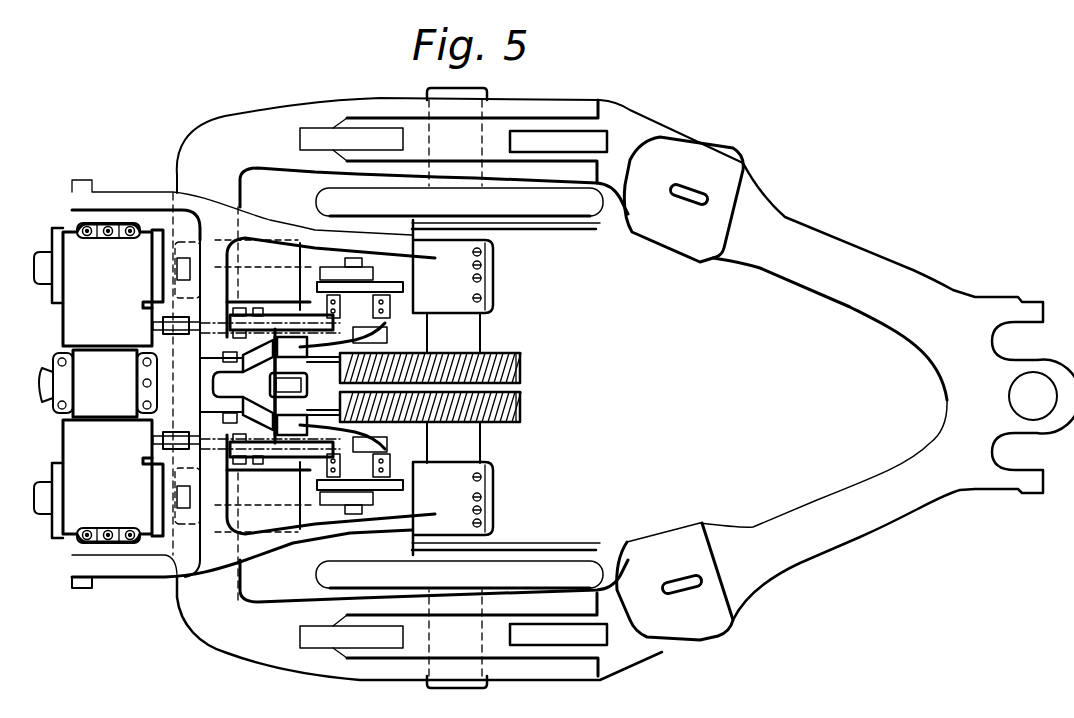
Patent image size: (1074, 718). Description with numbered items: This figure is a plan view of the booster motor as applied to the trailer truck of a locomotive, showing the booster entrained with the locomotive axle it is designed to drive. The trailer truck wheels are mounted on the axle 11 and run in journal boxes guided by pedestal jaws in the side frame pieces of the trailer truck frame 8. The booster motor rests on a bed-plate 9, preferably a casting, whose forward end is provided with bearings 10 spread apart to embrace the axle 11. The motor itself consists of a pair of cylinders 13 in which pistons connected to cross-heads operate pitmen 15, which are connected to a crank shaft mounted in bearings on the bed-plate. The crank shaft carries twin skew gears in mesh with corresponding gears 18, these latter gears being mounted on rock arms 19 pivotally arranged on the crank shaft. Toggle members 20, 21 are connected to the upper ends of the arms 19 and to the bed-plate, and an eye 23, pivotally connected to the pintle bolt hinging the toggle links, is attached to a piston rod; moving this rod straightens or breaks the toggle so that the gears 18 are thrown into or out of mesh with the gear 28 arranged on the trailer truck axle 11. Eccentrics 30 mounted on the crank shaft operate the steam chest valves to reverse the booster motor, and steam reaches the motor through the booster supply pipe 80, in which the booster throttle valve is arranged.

The trailer truck frame 8 is at (752, 537).
The bed-plate 9 is at (112, 200).
The bearings 10 is at (453, 387).
The axle 11 is at (472, 333).
The cylinders 13 is at (117, 383).
The pitmen 15 is at (315, 270).
The gears 18 is at (343, 366).
The rock arms 19 is at (382, 343).
The toggle member 20 is at (330, 386).
The toggle member 21 is at (236, 385).
The eye 23 is at (288, 385).
The gear 28 is at (440, 387).
The eccentrics 30 is at (338, 325).
The booster supply pipe 80 is at (52, 377).